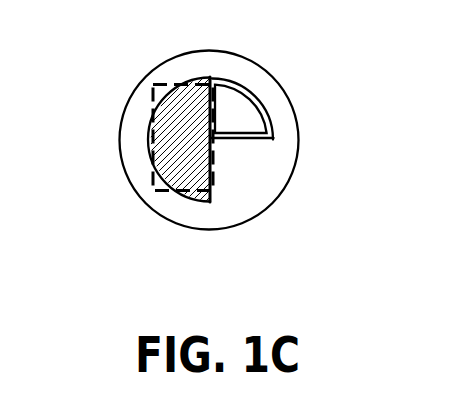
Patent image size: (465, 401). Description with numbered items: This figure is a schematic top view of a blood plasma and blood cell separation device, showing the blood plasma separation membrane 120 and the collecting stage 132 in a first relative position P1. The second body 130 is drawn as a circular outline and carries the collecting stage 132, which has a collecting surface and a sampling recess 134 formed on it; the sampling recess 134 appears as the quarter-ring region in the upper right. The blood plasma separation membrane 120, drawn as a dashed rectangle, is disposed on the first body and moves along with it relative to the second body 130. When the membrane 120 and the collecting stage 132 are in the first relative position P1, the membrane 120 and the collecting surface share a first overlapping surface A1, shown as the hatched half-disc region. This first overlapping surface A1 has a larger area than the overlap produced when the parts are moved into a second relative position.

The blood plasma separation membrane 120 is at (163, 83).
The second body 130 is at (298, 138).
The collecting stage 132 is at (153, 158).
The sampling recess 134 is at (230, 118).
The first overlapping surface A1 is at (178, 138).
The first relative position P1 is at (416, 263).